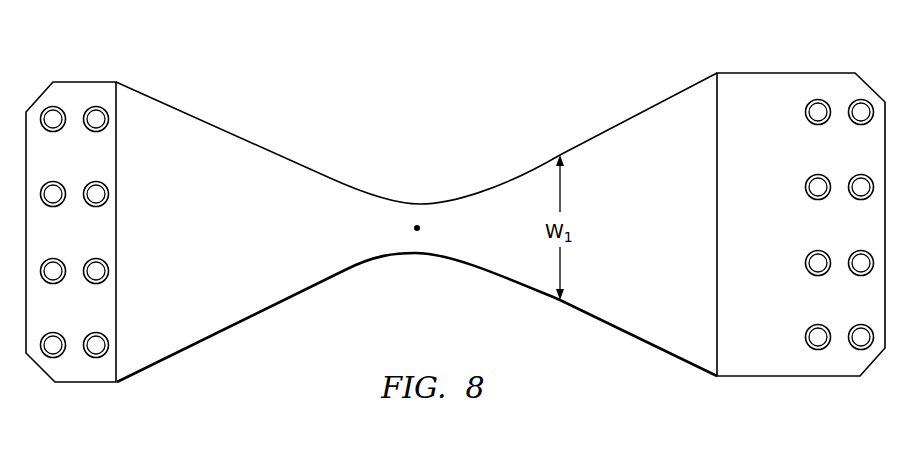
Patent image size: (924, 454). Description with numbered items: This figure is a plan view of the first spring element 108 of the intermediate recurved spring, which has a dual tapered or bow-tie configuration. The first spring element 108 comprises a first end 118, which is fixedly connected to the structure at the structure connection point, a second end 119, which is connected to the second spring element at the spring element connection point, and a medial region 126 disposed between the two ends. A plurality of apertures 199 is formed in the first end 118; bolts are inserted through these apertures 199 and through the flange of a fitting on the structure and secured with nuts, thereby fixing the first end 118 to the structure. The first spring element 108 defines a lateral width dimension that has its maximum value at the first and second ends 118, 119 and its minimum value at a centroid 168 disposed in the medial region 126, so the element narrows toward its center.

The second end 119 is at (68, 92).
The first end 118 is at (750, 100).
The first spring element 108 is at (190, 115).
The medial region 126 is at (315, 212).
The centroid 168 is at (417, 231).
The apertures 199 is at (805, 345).